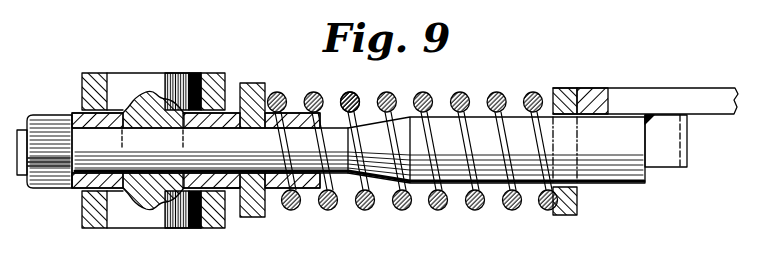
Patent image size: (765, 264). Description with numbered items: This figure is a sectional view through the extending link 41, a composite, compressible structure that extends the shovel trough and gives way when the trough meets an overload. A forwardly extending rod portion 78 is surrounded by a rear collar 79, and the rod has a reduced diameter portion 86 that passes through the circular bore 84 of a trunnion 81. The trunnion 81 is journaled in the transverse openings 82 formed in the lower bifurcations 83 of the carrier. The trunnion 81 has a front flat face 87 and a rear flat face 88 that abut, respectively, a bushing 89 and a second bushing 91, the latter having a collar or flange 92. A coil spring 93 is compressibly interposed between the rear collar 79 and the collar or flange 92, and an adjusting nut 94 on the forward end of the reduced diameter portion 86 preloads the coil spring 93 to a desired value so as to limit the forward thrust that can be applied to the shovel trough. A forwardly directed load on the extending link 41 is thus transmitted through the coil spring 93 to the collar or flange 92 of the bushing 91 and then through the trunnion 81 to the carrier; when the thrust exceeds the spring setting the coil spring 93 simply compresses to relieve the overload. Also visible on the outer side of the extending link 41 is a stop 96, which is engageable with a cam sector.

The extending link 41 is at (642, 70).
The rod portion 78 is at (434, 130).
The rear collar 79 is at (578, 211).
The trunnion 81 is at (166, 78).
The transverse openings 82 is at (109, 84).
The lower bifurcations 83 is at (93, 77).
The circular bore 84 is at (142, 128).
The reduced diameter portion 86 is at (273, 193).
The front flat face 87 is at (121, 141).
The rear flat face 88 is at (184, 143).
The bushing 89 is at (85, 188).
The bushing 91 is at (235, 190).
The collar or flange 92 is at (254, 84).
The coil spring 93 is at (353, 94).
The adjusting nut 94 is at (43, 118).
The stop 96 is at (668, 163).